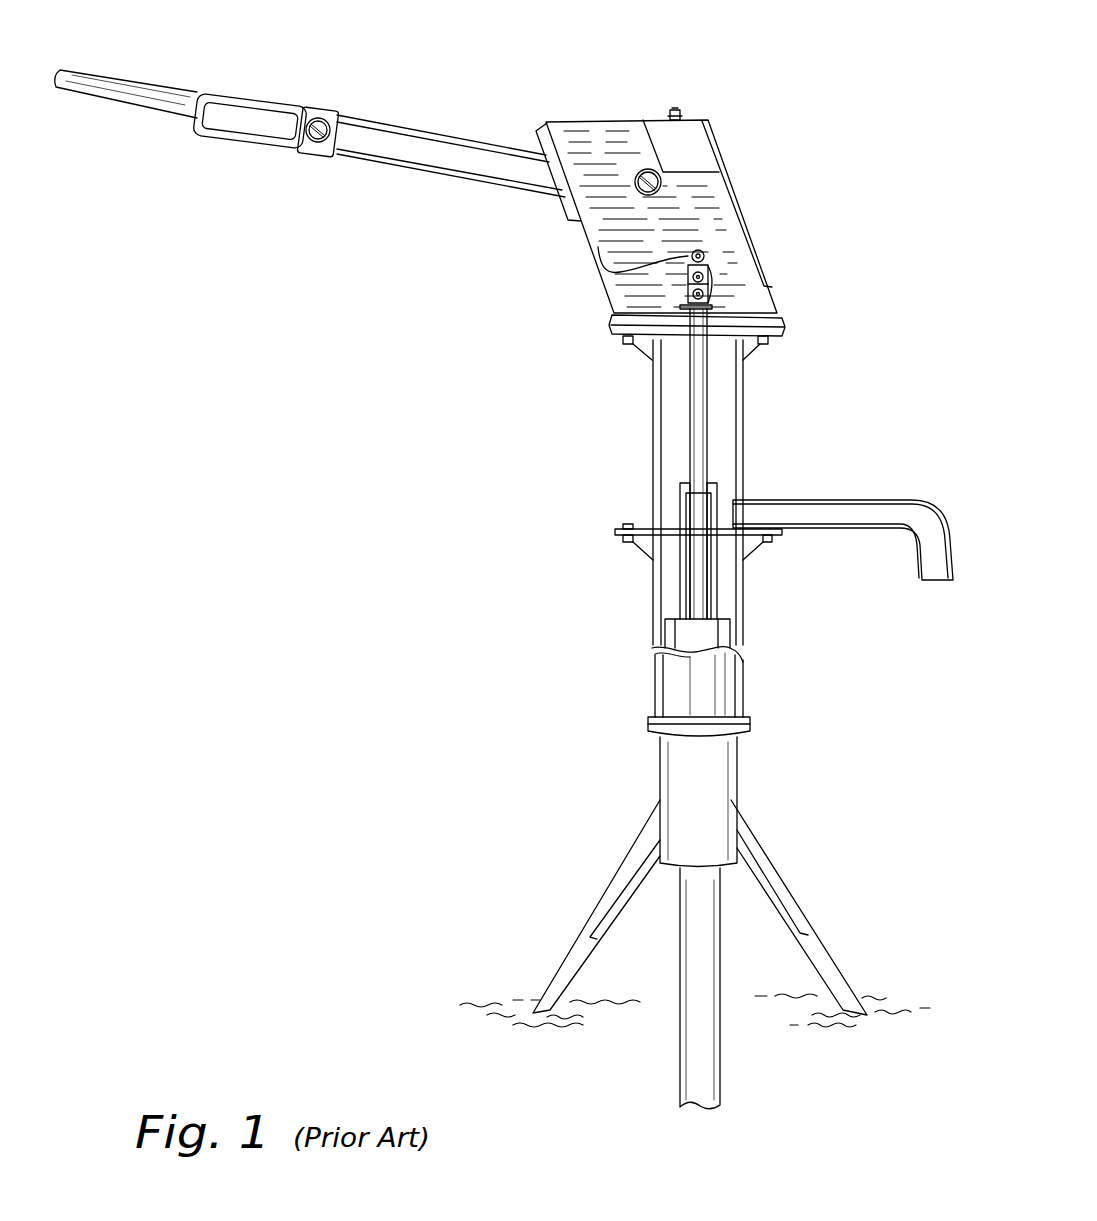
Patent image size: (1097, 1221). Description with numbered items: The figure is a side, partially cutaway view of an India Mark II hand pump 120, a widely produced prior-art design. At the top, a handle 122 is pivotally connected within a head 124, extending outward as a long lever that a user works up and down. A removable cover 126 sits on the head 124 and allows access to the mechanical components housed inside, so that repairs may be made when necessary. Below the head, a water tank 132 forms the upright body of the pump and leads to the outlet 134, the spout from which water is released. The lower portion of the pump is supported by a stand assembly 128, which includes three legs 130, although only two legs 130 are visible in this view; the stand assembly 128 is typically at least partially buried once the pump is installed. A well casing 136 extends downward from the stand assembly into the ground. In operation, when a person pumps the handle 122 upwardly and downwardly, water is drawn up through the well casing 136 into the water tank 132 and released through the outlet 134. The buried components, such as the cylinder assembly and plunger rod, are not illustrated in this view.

The hand pump 120 is at (780, 57).
The handle 122 is at (393, 167).
The head 124 is at (597, 237).
The removable cover 126 is at (703, 157).
The stand assembly 128 is at (660, 670).
The legs 130 is at (587, 925).
The water tank 132 is at (670, 423).
The outlet 134 is at (857, 500).
The well casing 136 is at (722, 1050).